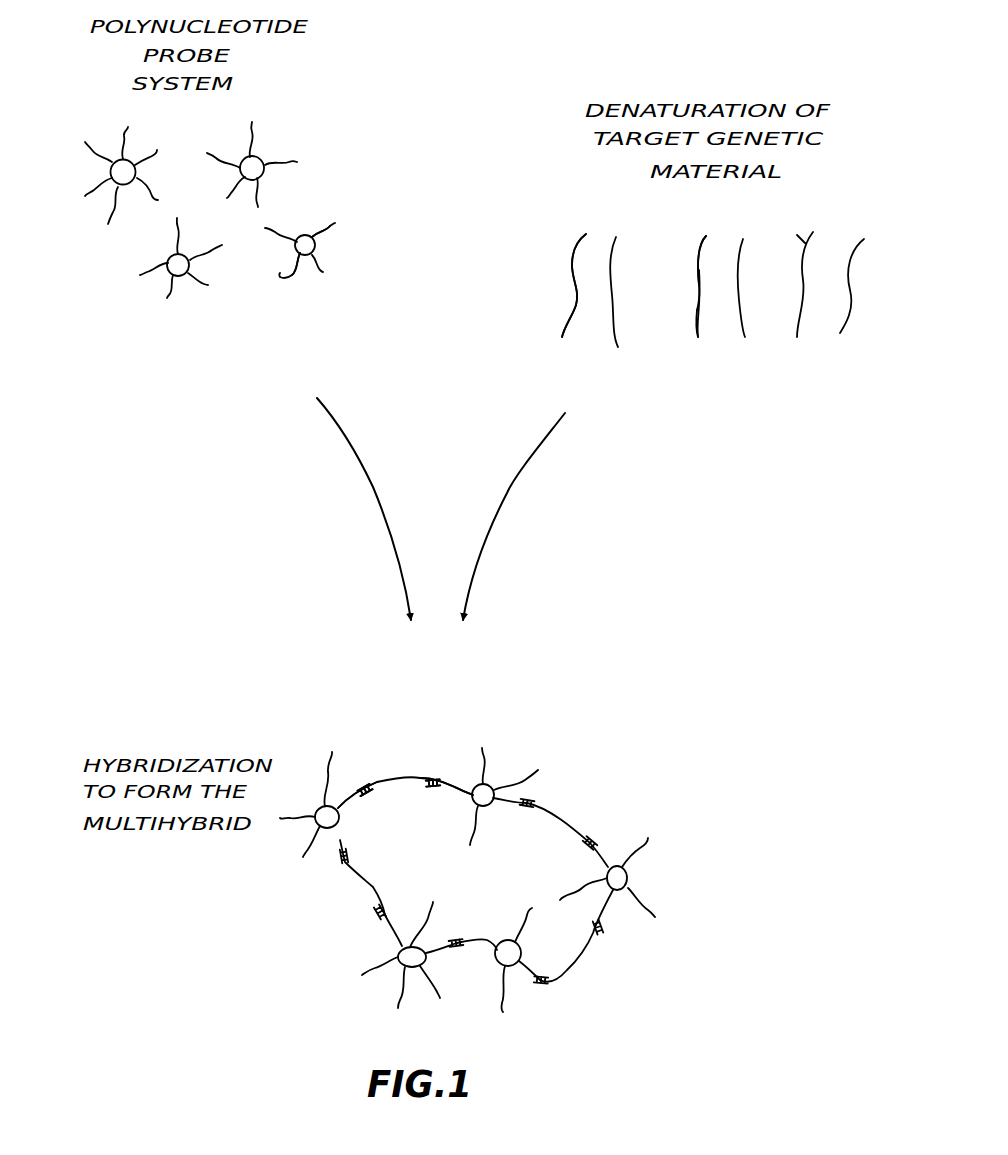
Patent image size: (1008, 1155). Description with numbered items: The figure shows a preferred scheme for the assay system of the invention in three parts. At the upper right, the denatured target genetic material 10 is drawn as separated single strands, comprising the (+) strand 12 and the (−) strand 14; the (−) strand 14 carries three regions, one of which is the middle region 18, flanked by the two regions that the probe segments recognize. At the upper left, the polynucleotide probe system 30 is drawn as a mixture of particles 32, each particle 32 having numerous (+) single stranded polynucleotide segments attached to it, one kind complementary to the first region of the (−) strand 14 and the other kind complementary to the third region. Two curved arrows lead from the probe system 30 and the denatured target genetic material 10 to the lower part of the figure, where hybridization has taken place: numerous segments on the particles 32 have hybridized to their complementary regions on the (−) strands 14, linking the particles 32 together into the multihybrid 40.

The denatured target genetic material 10 is at (696, 335).
The (+) strand 12 is at (615, 352).
The (−) strand 14 is at (560, 346).
The region 18 is at (569, 289).
The polynucleotide probe system 30 is at (222, 250).
The particle 32 is at (110, 187).
The multihybrid 40 is at (704, 873).